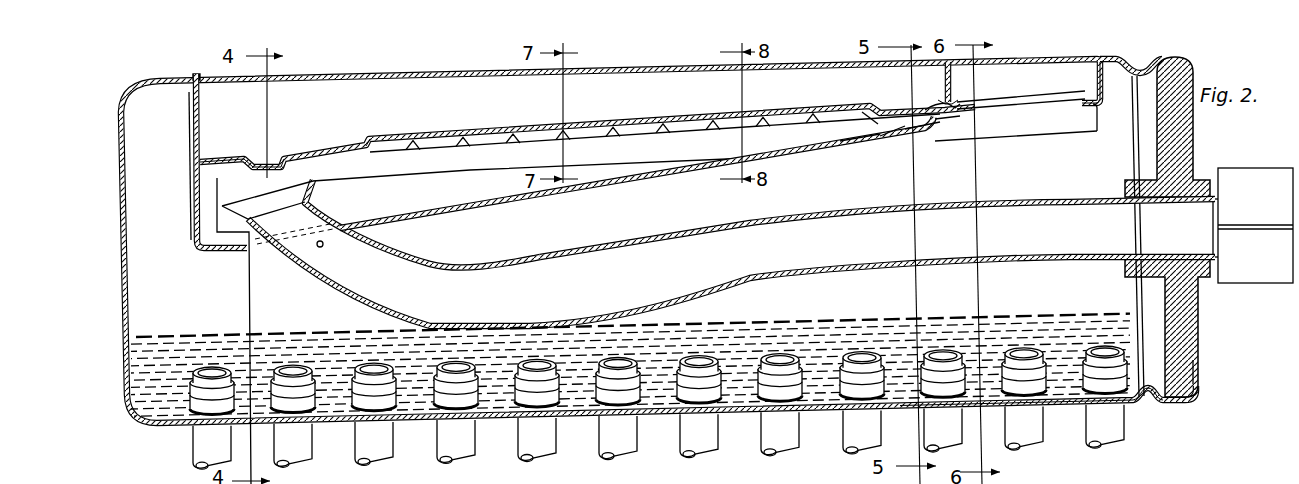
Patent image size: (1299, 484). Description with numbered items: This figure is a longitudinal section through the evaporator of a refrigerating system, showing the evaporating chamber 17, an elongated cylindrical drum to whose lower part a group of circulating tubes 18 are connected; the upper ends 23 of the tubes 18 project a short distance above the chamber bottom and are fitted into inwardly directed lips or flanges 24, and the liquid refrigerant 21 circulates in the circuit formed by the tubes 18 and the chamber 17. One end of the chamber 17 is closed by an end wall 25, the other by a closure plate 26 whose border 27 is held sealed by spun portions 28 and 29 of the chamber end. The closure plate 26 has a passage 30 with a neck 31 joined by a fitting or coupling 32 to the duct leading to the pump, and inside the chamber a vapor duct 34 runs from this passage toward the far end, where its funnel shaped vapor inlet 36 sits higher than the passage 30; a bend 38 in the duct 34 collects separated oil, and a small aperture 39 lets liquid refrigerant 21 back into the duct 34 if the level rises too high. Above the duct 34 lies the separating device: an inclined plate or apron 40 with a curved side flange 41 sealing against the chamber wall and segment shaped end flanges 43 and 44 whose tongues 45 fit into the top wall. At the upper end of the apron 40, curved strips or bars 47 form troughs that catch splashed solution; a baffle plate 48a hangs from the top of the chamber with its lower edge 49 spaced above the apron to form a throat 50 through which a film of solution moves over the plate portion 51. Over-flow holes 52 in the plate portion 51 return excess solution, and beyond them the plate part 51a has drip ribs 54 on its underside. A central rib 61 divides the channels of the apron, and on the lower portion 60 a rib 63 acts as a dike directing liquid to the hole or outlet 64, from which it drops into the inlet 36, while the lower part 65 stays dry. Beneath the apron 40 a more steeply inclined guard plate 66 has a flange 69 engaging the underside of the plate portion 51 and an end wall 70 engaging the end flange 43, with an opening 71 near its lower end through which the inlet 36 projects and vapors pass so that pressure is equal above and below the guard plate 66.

The evaporating chamber 17 is at (1052, 410).
The circulating tubes 18 is at (858, 436).
The liquid refrigerant 21 is at (746, 328).
The upper ends of the tubes 23 is at (1095, 350).
The inwardly directed lips or flanges 24 is at (1130, 410).
The end wall 25 is at (126, 224).
The closure plate 26 is at (1190, 125).
The border 27 is at (1198, 395).
The spun portion 28 is at (1197, 372).
The spun portion 29 is at (1143, 70).
The passage 30 is at (1185, 222).
The neck 31 is at (1212, 272).
The fitting or coupling 32 is at (1237, 240).
The vapor duct 34 is at (1004, 201).
The vapor inlet 36 is at (312, 181).
The bend 38 is at (470, 270).
The aperture 39 is at (320, 249).
The inclined plate or apron 40 is at (430, 139).
The curved side flange 41 is at (1040, 129).
The segment shaped end flange 43 is at (202, 108).
The segment shaped end flange 44 is at (1097, 79).
The tongues 45 is at (199, 66).
The strips or bars 47 is at (1000, 101).
The baffle plate 48a is at (944, 98).
The lower edge of the baffle plate 49 is at (930, 106).
The passage or throat 50 is at (952, 100).
The plate portion 51 is at (935, 129).
The plate part 51a is at (868, 141).
The over-flow holes 52 is at (890, 138).
The drip ribs 54 is at (845, 127).
The lower portion of the apron 60 is at (298, 151).
The rib 61 is at (610, 126).
The rib 63 is at (345, 146).
The hole or outlet 64 is at (270, 163).
The lower part of the plate 65 is at (228, 158).
The guard plate 66 is at (626, 187).
The flange 69 is at (950, 119).
The end wall 70 is at (190, 172).
The hole or opening 71 is at (242, 250).